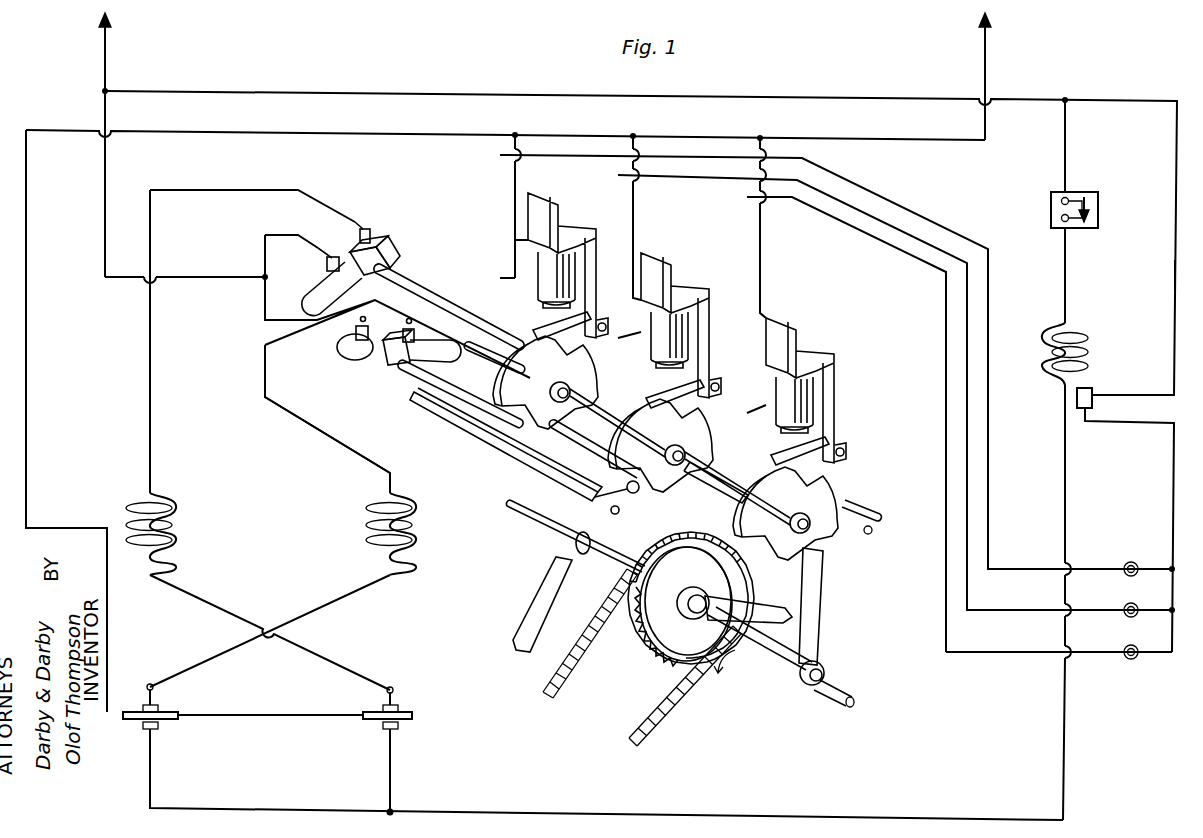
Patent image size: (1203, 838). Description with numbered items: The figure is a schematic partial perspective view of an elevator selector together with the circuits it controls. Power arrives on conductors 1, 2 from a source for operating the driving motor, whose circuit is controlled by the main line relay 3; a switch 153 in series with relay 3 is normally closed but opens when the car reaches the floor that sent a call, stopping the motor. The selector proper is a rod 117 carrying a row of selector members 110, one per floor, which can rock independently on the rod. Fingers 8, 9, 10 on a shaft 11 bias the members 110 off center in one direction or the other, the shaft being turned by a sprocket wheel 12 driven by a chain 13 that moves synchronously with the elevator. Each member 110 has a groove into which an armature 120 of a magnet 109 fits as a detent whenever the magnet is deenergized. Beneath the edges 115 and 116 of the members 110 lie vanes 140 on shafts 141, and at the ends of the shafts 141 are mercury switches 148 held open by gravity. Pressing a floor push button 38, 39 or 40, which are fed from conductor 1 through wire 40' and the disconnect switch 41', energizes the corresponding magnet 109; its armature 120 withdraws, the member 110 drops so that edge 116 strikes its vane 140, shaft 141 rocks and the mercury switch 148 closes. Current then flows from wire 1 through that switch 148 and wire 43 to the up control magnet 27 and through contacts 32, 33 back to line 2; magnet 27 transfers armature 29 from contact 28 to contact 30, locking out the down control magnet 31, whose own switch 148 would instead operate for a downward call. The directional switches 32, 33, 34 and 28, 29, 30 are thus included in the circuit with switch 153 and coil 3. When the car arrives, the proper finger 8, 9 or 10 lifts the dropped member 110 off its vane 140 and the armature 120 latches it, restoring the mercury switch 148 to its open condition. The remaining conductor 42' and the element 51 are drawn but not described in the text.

The conductor 1 is at (115, 54).
The conductor 2 is at (978, 59).
The main line relay 3 is at (1040, 362).
The finger 8 is at (818, 608).
The finger 9 is at (765, 610).
The finger 10 is at (540, 601).
The shaft 11 is at (852, 676).
The sprocket wheel 12 is at (655, 660).
The chain 13 is at (675, 706).
The up control magnet 27 is at (430, 535).
The contact 28 is at (397, 707).
The armature 29 is at (428, 716).
The contact 30 is at (398, 730).
The down control magnet 31 is at (195, 525).
The contact 32 is at (141, 697).
The armature 33 is at (128, 729).
The contact 34 is at (185, 732).
The push button switch 38 is at (1126, 648).
The push button switch 39 is at (1126, 606).
The push button switch 40 is at (1125, 553).
The wire 40' is at (1153, 275).
The switch 41' is at (1111, 402).
The conductor 42' is at (1005, 462).
The wire 43 is at (295, 420).
The relay 51 is at (1094, 194).
The magnet 109 is at (562, 250).
The selector member 110 is at (665, 448).
The edge 115 is at (850, 506).
The edge 116 is at (745, 498).
The rod 117 is at (590, 418).
The armature 120 is at (545, 325).
The vane 140 is at (520, 454).
The shaft 141 is at (450, 285).
The mercury switch 148 is at (395, 250).
The switch 153 is at (1086, 206).